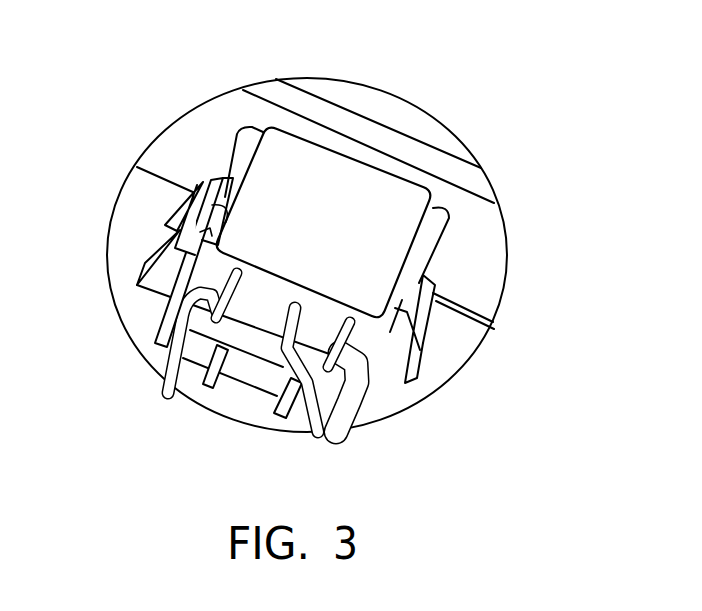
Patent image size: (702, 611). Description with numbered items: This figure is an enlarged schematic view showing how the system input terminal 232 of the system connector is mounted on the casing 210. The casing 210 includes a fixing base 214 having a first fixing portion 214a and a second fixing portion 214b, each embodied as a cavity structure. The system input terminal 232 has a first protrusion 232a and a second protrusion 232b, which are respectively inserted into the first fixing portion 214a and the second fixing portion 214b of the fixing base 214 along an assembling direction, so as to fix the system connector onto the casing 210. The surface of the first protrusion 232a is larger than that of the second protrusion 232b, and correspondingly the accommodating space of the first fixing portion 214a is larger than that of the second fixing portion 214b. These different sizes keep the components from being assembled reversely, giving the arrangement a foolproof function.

The casing 210 is at (137, 245).
The fixing base 214 is at (405, 363).
The first fixing portion 214a is at (217, 218).
The second fixing portion 214b is at (433, 293).
The system input terminal 232 is at (352, 190).
The first protrusion 232a is at (238, 172).
The second protrusion 232b is at (413, 283).